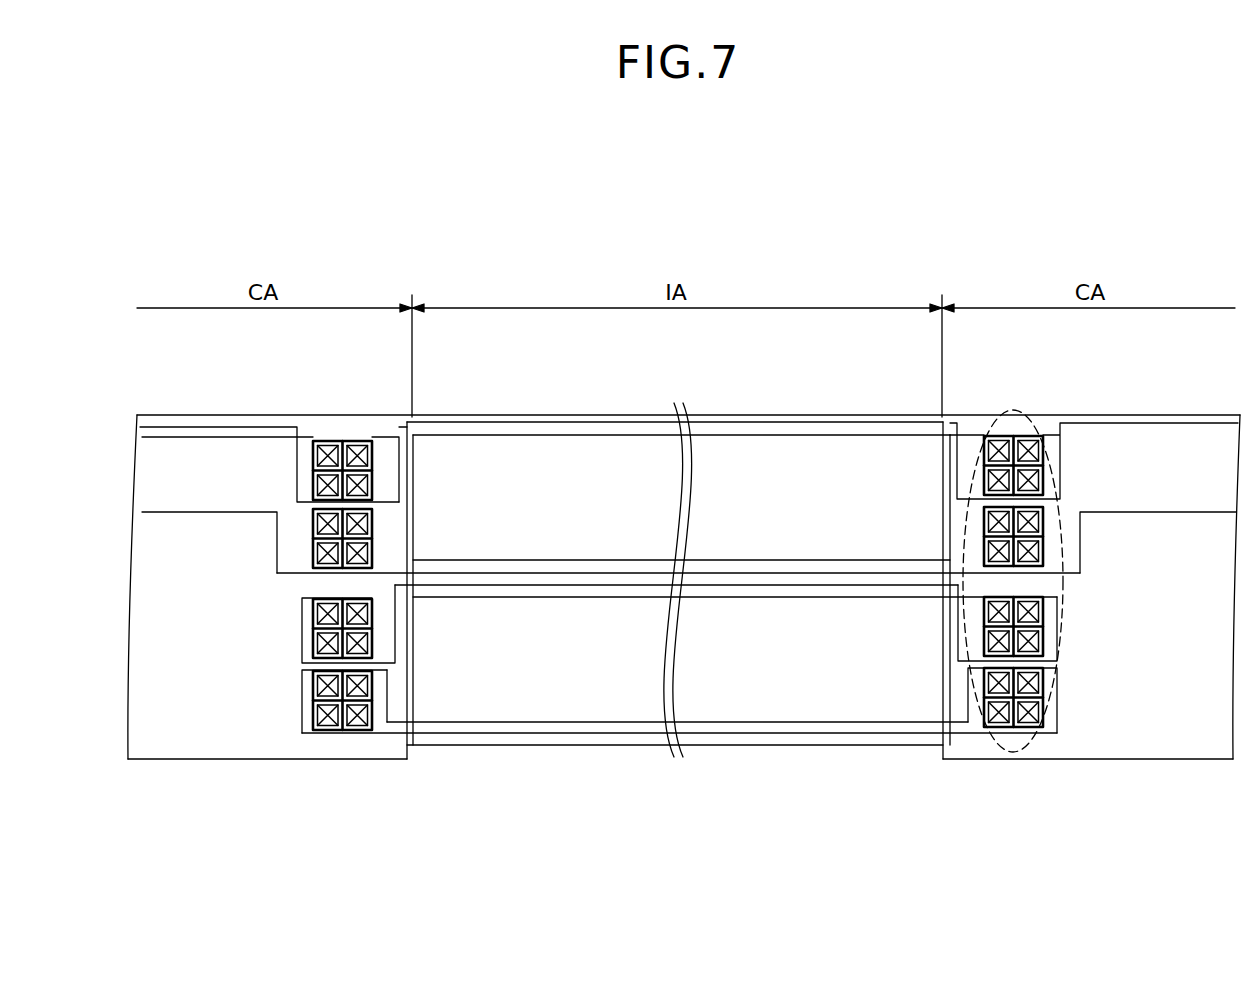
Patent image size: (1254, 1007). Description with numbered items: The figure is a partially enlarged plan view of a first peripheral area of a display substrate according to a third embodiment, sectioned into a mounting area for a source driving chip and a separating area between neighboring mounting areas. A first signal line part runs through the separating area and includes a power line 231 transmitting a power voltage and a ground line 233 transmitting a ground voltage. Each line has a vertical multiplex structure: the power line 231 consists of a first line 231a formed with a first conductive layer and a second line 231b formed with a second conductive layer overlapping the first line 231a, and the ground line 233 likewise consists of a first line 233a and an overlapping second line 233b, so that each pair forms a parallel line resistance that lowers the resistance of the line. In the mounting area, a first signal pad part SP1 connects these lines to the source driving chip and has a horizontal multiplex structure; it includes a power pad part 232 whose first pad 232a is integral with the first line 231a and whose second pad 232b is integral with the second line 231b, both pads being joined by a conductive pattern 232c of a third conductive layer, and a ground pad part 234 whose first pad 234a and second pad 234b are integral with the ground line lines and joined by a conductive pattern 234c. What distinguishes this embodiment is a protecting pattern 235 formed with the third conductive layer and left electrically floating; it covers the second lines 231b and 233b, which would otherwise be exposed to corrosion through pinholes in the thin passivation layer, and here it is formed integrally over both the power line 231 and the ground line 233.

The power line 231 is at (678, 543).
The first line 231a is at (776, 435).
The second line 231b is at (844, 423).
The power pad part 232 is at (273, 445).
The first pad 232a is at (328, 440).
The second pad 232b is at (313, 463).
The conductive pattern 232c is at (372, 443).
The ground line 233 is at (679, 711).
The first line 233a is at (776, 723).
The second line 233b is at (747, 796).
The ground pad part 234 is at (295, 723).
The first pad 234a is at (395, 820).
The second pad 234b is at (332, 731).
The conductive pattern 234c is at (381, 735).
The protecting pattern 235 is at (587, 413).
The first signal pad part SP1 is at (994, 436).